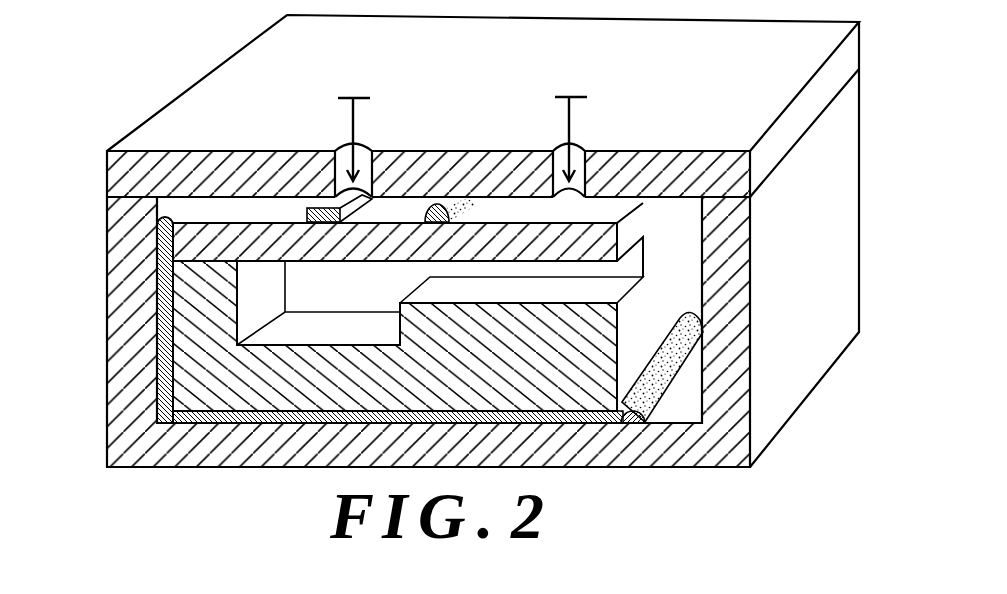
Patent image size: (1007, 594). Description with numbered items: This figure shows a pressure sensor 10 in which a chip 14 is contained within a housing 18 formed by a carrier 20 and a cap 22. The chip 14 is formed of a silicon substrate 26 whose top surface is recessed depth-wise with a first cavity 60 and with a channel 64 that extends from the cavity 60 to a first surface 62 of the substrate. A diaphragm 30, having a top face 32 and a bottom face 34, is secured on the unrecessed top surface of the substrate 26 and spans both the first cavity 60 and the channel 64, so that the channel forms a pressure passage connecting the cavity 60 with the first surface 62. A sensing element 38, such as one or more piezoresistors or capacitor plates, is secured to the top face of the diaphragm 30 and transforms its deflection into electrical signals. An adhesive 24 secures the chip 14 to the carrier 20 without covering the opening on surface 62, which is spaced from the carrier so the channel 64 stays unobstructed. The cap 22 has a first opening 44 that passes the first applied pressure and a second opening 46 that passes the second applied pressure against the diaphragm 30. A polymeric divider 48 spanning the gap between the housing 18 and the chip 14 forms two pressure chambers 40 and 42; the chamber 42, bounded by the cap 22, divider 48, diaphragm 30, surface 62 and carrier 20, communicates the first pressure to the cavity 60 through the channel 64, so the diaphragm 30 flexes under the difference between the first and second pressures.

The pressure sensor 10 is at (222, 100).
The chip 14 is at (374, 411).
The housing 18 is at (862, 129).
The carrier 20 is at (107, 367).
The cap 22 is at (100, 163).
The adhesive 24 is at (197, 423).
The silicon substrate 26 is at (398, 450).
The diaphragm 30 is at (158, 235).
The top face 32 is at (172, 220).
The bottom face 34 is at (165, 293).
The sensing element 38 is at (322, 200).
The pressure chamber 40 is at (167, 205).
The chamber 42 is at (667, 140).
The first opening 44 is at (596, 133).
The second opening 46 is at (364, 148).
The polymeric divider 48 is at (440, 198).
The first cavity 60 is at (334, 300).
The first surface 62 is at (661, 322).
The channel 64 is at (679, 310).